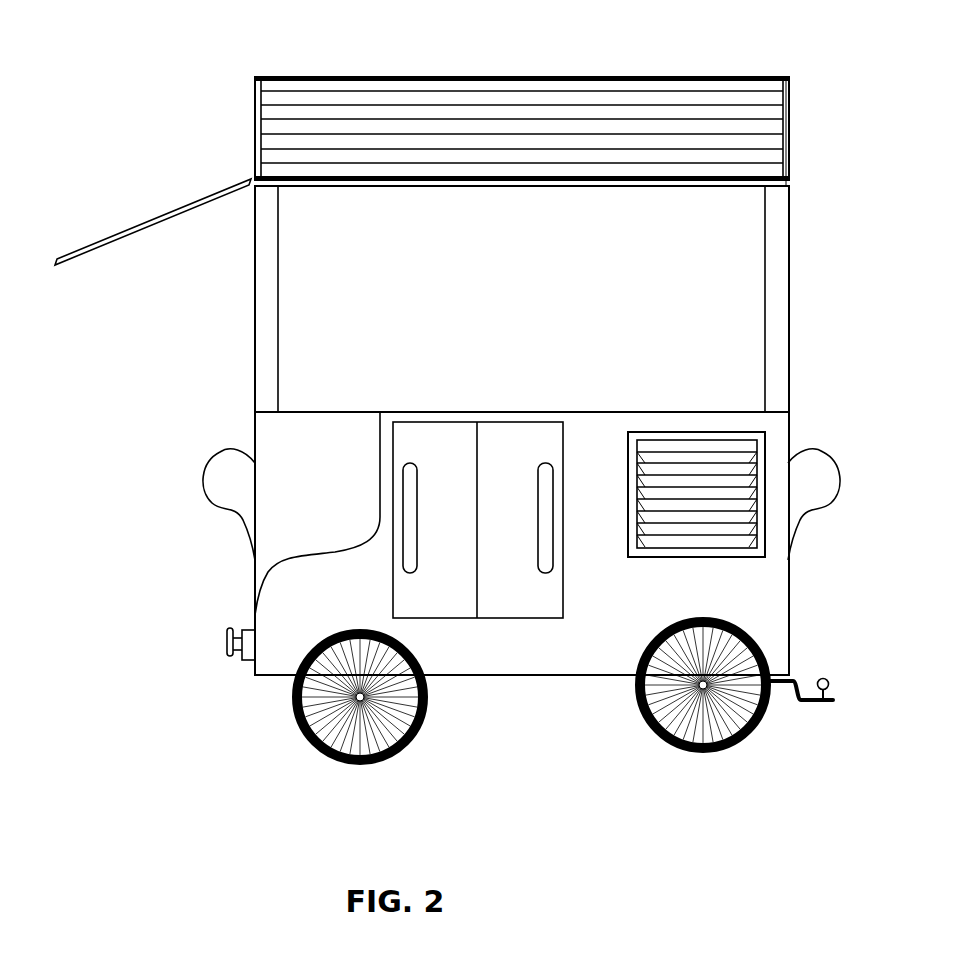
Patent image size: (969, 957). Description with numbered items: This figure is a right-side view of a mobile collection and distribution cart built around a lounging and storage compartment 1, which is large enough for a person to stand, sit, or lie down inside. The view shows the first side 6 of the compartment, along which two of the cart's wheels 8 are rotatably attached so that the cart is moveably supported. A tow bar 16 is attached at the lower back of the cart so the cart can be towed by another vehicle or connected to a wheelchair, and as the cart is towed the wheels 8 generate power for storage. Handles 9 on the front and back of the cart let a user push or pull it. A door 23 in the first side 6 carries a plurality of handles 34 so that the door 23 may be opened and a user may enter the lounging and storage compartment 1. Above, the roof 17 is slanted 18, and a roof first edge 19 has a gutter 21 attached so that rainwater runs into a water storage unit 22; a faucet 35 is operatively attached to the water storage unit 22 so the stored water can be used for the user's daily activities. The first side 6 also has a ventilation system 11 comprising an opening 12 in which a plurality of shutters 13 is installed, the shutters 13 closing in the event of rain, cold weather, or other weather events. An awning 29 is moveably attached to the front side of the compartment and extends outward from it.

The lounging and storage compartment 1 is at (253, 288).
The first side 6 is at (684, 270).
The wheels 8 is at (426, 724).
The handles 9 is at (228, 447).
The ventilation system 11 is at (628, 472).
The opening 12 is at (712, 559).
The shutters 13 is at (766, 456).
The tow bar 16 is at (835, 695).
The roof 17 is at (310, 76).
The slant 18 is at (420, 86).
The roof first edge 19 is at (790, 174).
The gutter 21 is at (470, 187).
The water storage unit 22 is at (306, 482).
The door 23 is at (508, 620).
The awning 29 is at (170, 218).
The handles 34 is at (416, 556).
The faucet 35 is at (226, 627).